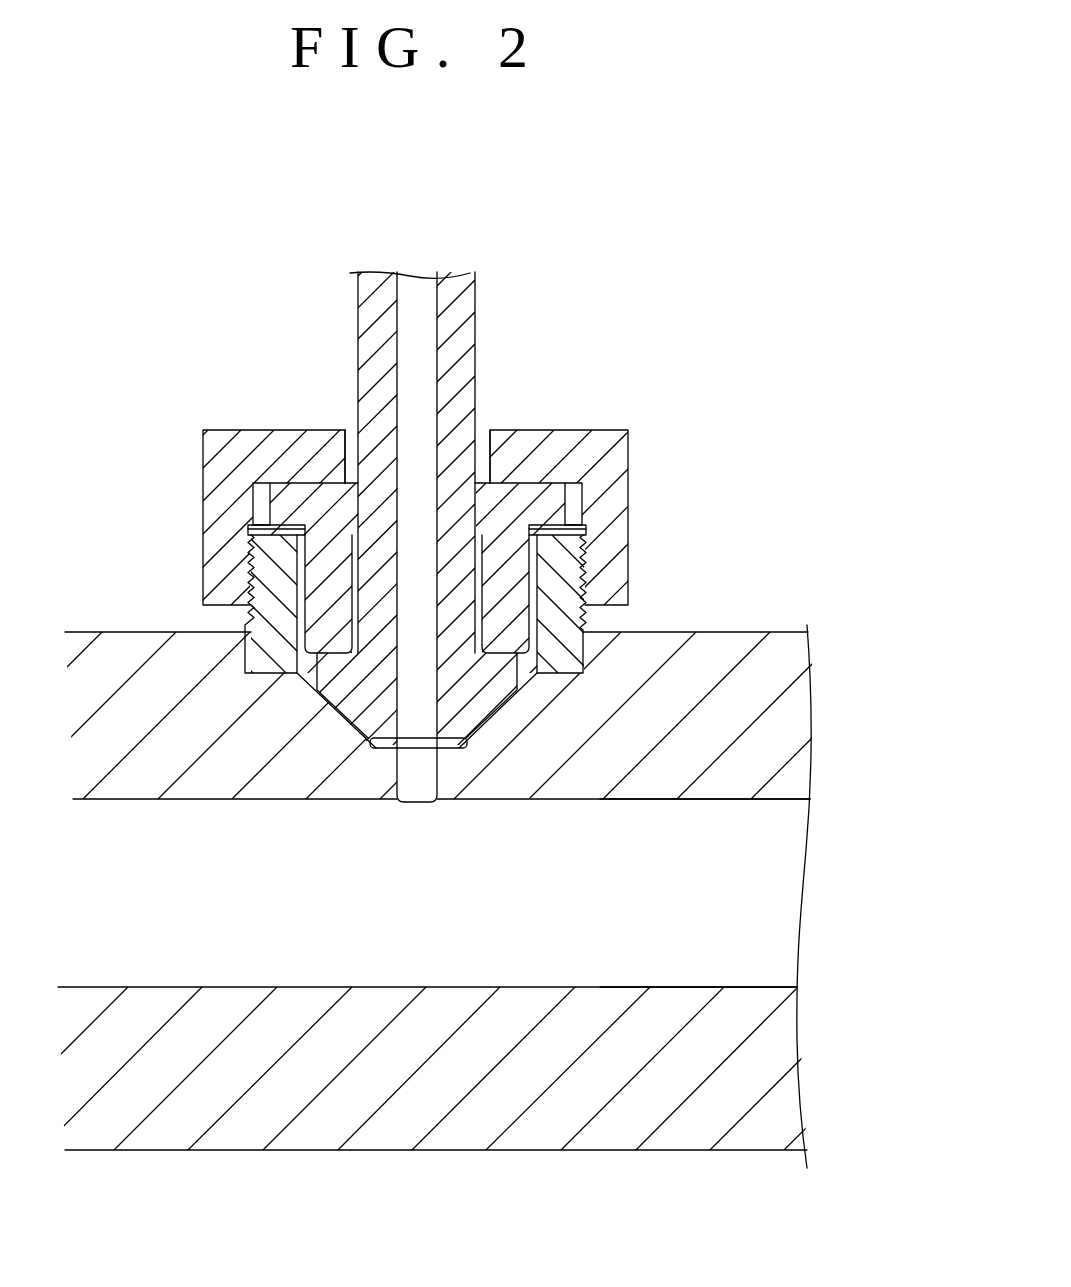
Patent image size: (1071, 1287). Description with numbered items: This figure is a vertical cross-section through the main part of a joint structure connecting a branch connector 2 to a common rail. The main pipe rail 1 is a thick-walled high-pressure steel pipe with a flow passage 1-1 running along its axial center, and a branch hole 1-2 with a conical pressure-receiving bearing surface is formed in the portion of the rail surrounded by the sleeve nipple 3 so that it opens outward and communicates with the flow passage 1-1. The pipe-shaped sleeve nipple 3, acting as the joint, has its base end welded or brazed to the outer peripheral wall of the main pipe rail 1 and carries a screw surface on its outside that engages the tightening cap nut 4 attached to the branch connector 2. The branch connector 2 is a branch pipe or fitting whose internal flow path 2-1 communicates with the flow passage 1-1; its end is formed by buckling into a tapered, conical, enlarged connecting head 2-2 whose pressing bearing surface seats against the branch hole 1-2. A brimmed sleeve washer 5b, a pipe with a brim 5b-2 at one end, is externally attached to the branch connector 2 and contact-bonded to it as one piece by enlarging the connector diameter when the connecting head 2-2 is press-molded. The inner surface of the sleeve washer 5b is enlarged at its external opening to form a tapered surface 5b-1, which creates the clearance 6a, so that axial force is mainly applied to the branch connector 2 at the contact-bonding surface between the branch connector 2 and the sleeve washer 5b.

The main pipe rail 1 is at (790, 718).
The flow passage 1-1 is at (769, 800).
The branch hole 1-2 is at (414, 788).
The branch connector 2 is at (478, 294).
The flow path 2-1 is at (413, 291).
The connecting head 2-2 is at (352, 707).
The sleeve nipple 3 is at (568, 609).
The tightening cap nut 4 is at (618, 452).
The sleeve washer 5b is at (566, 497).
The tapered surface 5b-1 is at (484, 547).
The brim 5b-2 is at (257, 500).
The clearance 6a is at (355, 545).